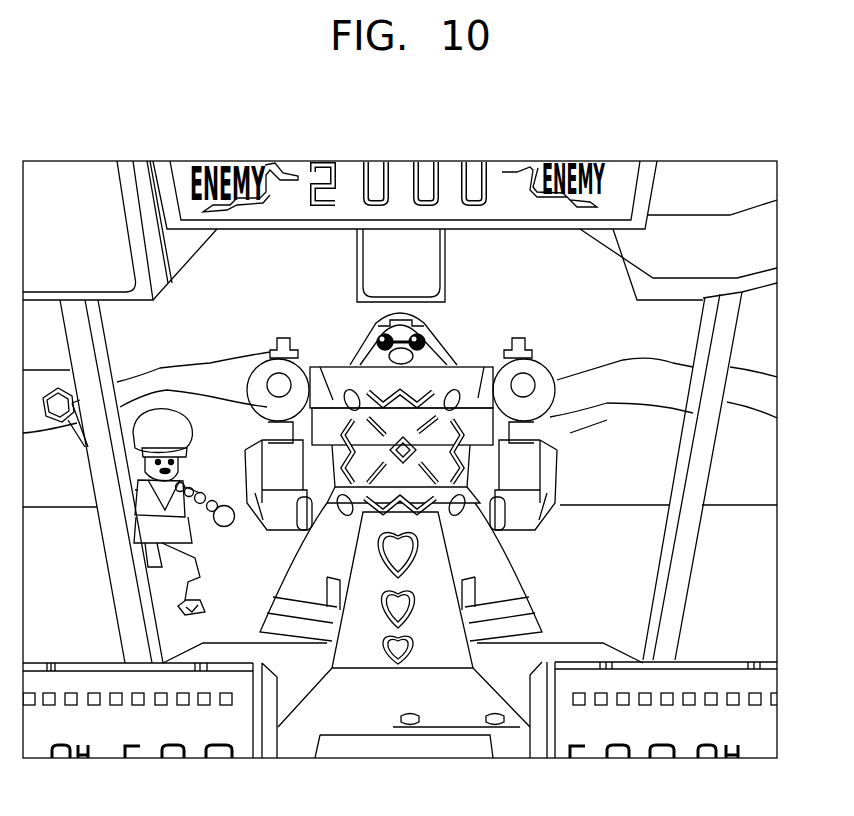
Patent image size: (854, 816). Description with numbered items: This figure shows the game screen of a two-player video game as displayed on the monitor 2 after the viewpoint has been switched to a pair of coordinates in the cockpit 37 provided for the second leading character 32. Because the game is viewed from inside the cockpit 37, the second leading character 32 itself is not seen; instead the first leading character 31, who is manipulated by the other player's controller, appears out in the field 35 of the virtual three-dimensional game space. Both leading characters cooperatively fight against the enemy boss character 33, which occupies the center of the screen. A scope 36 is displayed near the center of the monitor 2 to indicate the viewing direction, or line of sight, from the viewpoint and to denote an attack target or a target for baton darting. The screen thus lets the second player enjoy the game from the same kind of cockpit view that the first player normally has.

The monitor 2 is at (698, 180).
The first leading character 31 is at (158, 427).
The second leading character 32 is at (395, 733).
The enemy boss character 33 is at (443, 335).
The field 35 is at (88, 591).
The scope 36 is at (470, 477).
The cockpit 37 is at (577, 663).